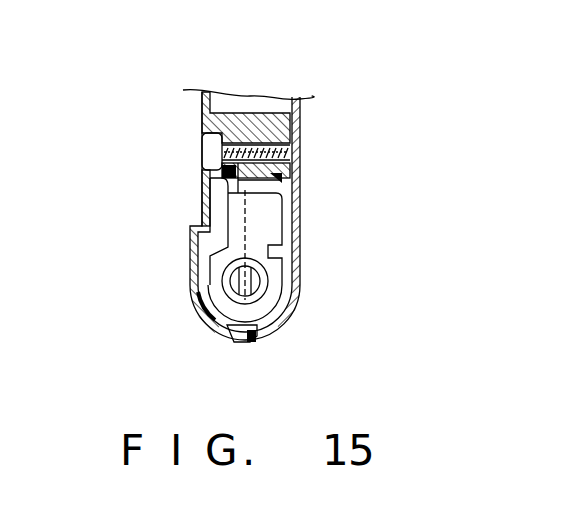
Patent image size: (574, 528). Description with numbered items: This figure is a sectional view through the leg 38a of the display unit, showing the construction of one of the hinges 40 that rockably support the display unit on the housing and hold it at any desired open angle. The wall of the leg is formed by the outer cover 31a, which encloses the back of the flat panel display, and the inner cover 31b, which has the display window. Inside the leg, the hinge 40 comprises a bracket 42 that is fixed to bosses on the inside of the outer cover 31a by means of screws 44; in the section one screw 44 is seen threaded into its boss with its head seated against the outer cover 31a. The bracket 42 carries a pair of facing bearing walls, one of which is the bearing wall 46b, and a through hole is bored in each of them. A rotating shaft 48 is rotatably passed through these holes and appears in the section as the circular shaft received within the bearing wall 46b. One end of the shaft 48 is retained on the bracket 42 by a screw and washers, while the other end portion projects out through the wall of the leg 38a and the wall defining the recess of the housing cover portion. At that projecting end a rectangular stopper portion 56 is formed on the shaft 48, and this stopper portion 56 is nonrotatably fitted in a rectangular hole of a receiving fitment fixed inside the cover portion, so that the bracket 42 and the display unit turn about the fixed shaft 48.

The outer cover 31a is at (300, 208).
The inner cover 31b is at (201, 186).
The leg 38a is at (312, 141).
The hinge 40 is at (284, 252).
The bracket 42 is at (237, 130).
The screw 44 is at (205, 148).
The bearing wall 46b is at (268, 290).
The rotating shaft 48 is at (228, 283).
The stopper portion 56 is at (245, 296).